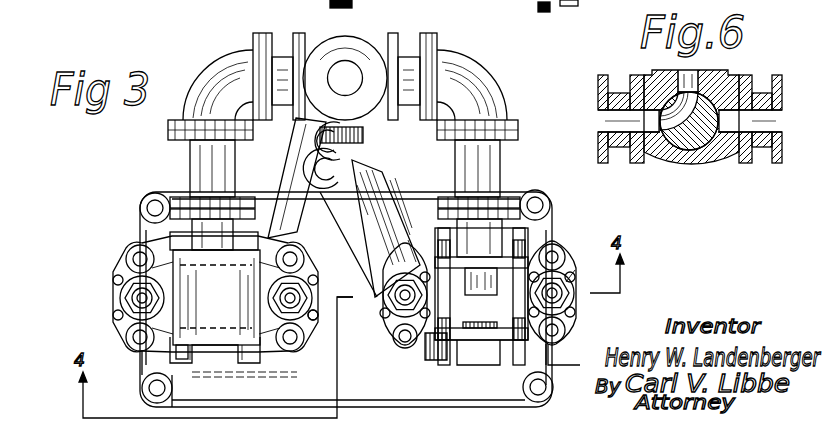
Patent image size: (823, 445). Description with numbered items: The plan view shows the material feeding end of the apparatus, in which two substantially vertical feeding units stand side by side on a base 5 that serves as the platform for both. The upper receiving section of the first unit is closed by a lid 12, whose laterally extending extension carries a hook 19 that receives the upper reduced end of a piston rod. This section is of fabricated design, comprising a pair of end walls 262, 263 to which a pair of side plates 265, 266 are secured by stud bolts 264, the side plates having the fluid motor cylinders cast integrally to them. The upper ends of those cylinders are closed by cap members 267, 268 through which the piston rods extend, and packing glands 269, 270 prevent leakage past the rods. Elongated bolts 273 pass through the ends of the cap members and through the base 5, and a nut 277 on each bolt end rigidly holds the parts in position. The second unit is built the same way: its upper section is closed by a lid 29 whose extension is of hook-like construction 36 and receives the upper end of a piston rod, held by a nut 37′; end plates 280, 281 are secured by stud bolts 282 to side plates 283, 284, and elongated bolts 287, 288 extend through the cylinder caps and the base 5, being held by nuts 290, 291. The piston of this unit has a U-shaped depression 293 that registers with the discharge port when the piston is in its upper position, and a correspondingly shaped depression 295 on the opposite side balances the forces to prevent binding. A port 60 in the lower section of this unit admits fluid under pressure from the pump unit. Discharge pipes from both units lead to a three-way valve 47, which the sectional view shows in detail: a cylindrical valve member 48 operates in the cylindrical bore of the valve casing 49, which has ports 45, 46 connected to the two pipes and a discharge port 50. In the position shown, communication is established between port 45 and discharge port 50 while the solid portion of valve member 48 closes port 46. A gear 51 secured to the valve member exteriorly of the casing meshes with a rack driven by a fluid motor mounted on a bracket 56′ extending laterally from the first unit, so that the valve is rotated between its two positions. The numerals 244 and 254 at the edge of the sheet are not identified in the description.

In FIG. 3, the valve 244 is at (352, 5).
In FIG. 3, the valve 254 is at (538, 9).
In FIG. 3, the port 60 is at (570, 5).
In FIG. 3, the three-way valve 47 is at (326, 45).
In FIG. 6, the three-way valve 47 is at (696, 160).
In FIG. 3, the gear 51 is at (363, 135).
In FIG. 3, the hook-like construction 36 is at (345, 162).
In FIG. 3, the bracket 56′ is at (290, 173).
In FIG. 3, the end plate 280 is at (470, 188).
In FIG. 3, the lid 29 is at (383, 228).
In FIG. 3, the stud bolts 282 is at (560, 226).
In FIG. 3, the elongated bolt 273 is at (140, 349).
In FIG. 3, the nut 277 is at (134, 250).
In FIG. 3, the cap member 267 is at (124, 270).
In FIG. 3, the packing gland 269 is at (119, 300).
In FIG. 3, the end wall 262 is at (205, 268).
In FIG. 3, the lid 12 is at (215, 288).
In FIG. 3, the hook 19 is at (304, 322).
In FIG. 3, the packing gland 270 is at (356, 280).
In FIG. 3, the stud bolts 264 is at (148, 372).
In FIG. 3, the side plate 265 is at (186, 361).
In FIG. 3, the end wall 263 is at (222, 350).
In FIG. 3, the side plate 266 is at (258, 380).
In FIG. 3, the cap member 268 is at (320, 340).
In FIG. 3, the elongated bolt 287 is at (395, 337).
In FIG. 3, the nut 290 is at (400, 348).
In FIG. 3, the side plate 283 is at (437, 358).
In FIG. 3, the end plate 281 is at (470, 346).
In FIG. 3, the U-shaped depression 293 is at (478, 290).
In FIG. 3, the depression 295 is at (462, 358).
In FIG. 3, the base 5 is at (390, 410).
In FIG. 3, the elongated bolt 288 is at (566, 328).
In FIG. 3, the nut 291 is at (575, 350).
In FIG. 3, the side plate 284 is at (552, 362).
In FIG. 3, the nut 37′ is at (570, 292).
In FIG. 6, the discharge port 50 is at (696, 68).
In FIG. 6, the port 45 is at (630, 140).
In FIG. 6, the valve casing 49 is at (684, 150).
In FIG. 6, the valve member 48 is at (714, 150).
In FIG. 6, the port 46 is at (754, 148).